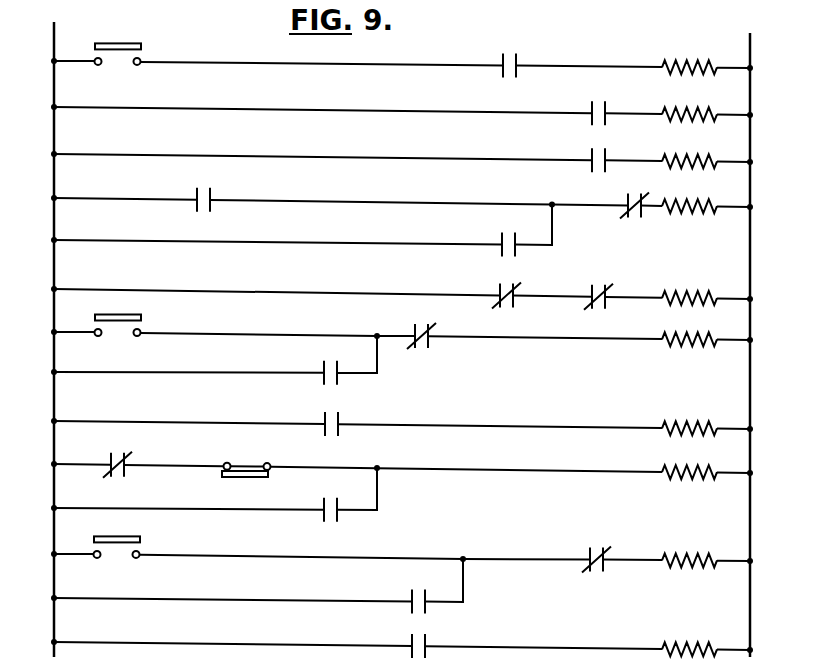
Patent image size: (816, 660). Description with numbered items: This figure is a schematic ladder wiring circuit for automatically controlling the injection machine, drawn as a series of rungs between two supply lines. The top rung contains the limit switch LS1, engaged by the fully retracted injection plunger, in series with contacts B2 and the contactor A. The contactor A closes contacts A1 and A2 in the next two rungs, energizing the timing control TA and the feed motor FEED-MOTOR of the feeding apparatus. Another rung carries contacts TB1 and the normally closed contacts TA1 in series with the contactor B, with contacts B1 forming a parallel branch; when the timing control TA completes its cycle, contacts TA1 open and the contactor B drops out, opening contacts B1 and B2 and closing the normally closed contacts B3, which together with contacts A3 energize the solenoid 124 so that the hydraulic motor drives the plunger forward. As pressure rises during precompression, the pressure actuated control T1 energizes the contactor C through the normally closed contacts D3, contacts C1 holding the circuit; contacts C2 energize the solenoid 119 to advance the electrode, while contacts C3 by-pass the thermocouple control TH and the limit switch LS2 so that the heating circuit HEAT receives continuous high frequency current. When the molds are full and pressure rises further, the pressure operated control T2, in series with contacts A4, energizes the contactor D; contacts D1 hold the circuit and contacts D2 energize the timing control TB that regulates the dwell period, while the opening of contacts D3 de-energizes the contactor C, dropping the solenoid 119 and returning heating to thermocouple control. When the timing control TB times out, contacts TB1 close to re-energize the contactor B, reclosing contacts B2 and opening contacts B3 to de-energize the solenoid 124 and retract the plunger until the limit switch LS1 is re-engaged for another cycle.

The limit switch LS1 is at (118, 45).
The contacts B2 is at (496, 60).
The contactor A is at (689, 56).
The contacts A1 is at (584, 109).
The timing control TA is at (689, 103).
The contacts A2 is at (584, 156).
The feed motor FEED-MOTOR is at (689, 148).
The contacts TB1 is at (183, 195).
The contacts TA1 is at (631, 198).
The contactor B is at (689, 196).
The contacts B1 is at (491, 241).
The contacts B3 is at (494, 291).
The contacts A3 is at (587, 294).
The solenoid 124 is at (689, 284).
The pressure actuated control T1 is at (118, 315).
The contacts D3 is at (408, 331).
The contactor C is at (689, 328).
The contacts C1 is at (316, 368).
The contacts C2 is at (318, 420).
The solenoid 119 is at (689, 414).
The thermocouple control TH is at (117, 456).
The limit switch LS2 is at (246, 458).
The high frequency heating circuit HEAT is at (692, 460).
The contacts C3 is at (316, 505).
The pressure operated control T2 is at (117, 538).
The contacts A4 is at (582, 554).
The contactor D is at (689, 548).
The contacts D1 is at (401, 597).
The contacts D2 is at (401, 642).
The timing control TB is at (689, 634).